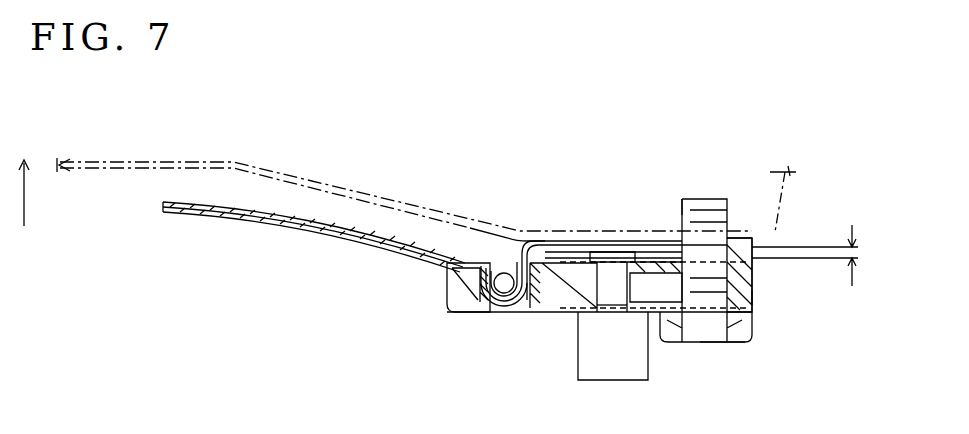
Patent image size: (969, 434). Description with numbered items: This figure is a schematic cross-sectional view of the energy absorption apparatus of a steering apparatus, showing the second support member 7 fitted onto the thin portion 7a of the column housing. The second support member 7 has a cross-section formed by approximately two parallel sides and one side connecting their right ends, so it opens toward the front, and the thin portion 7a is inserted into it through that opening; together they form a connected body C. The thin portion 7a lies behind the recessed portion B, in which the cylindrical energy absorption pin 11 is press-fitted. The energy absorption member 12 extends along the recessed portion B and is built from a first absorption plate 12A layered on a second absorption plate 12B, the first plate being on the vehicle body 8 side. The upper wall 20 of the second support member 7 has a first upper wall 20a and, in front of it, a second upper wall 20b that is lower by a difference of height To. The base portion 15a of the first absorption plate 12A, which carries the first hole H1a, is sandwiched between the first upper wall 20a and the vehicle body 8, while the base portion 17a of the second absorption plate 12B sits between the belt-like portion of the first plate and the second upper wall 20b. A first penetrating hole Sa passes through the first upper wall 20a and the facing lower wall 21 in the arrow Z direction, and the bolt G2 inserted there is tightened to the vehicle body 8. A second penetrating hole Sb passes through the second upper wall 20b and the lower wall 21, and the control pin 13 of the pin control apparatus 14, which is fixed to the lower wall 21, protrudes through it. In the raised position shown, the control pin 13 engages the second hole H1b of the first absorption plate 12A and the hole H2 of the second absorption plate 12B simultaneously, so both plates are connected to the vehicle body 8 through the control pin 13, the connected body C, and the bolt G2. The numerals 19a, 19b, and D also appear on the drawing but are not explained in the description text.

The second support member 7 is at (762, 302).
The thin portion 7a is at (660, 318).
The vehicle body 8 is at (318, 180).
The energy absorption pin 11 is at (500, 306).
The energy absorption member 12 is at (90, 198).
The first absorption plate 12A is at (162, 206).
The second absorption plate 12B is at (168, 213).
The control pin 13 is at (624, 312).
The pin control apparatus 14 is at (615, 384).
The base portion 15a is at (748, 240).
The base portion 17a is at (607, 243).
The clip upper portion 19a is at (516, 252).
The clip lower portion 19b is at (528, 306).
The upper wall 20 is at (755, 238).
The first upper wall 20a is at (674, 220).
The second upper wall 20b is at (568, 248).
The lower wall 21 is at (753, 322).
The recessed portion B is at (472, 310).
The connected body C is at (754, 298).
The distance D is at (665, 256).
The bolt G2 is at (738, 342).
The first hole H1a is at (722, 240).
The second hole H1b is at (626, 243).
The hole H2 is at (606, 248).
The first penetrating hole Sa is at (718, 340).
The second penetrating hole Sb is at (600, 312).
The difference of height To is at (805, 258).
The arrow Z direction Z is at (22, 177).